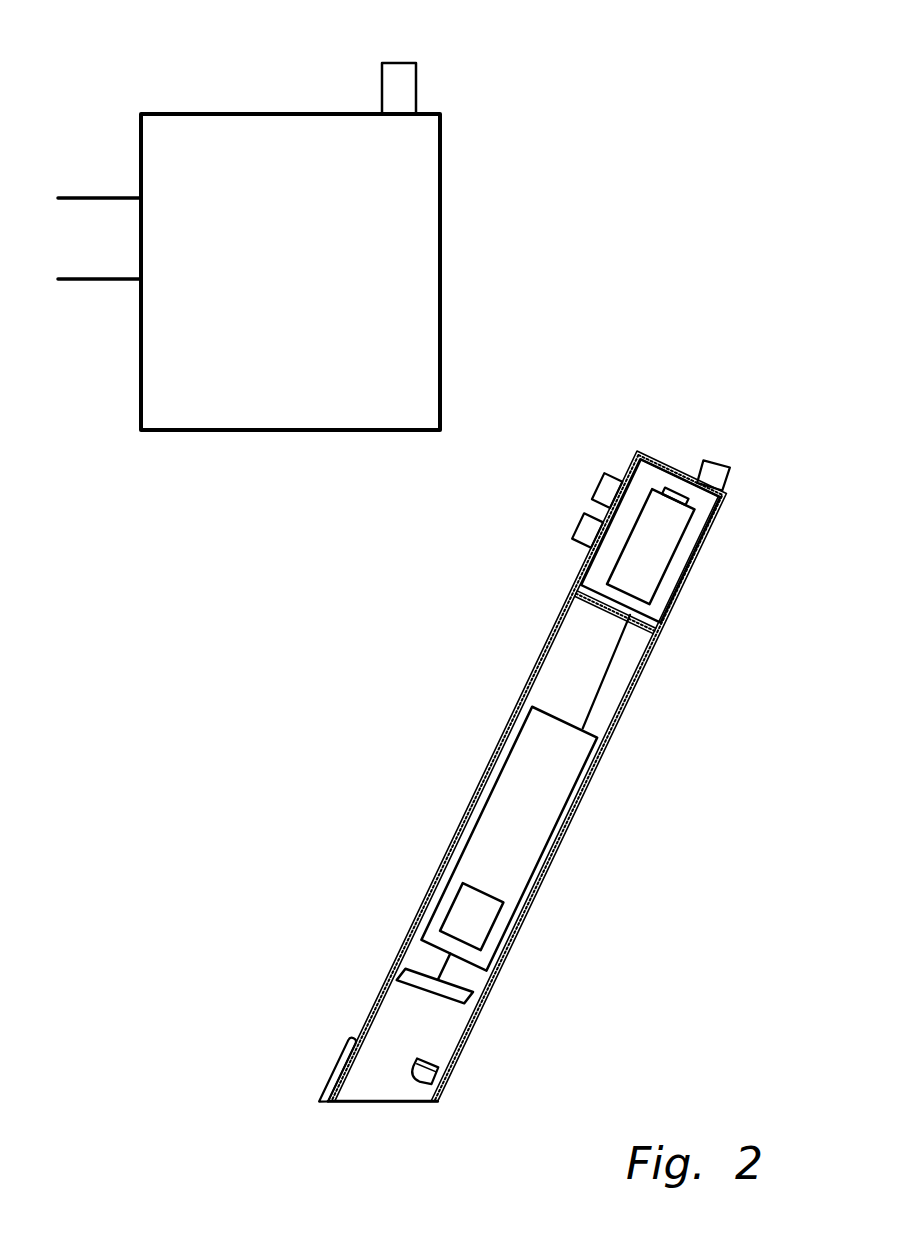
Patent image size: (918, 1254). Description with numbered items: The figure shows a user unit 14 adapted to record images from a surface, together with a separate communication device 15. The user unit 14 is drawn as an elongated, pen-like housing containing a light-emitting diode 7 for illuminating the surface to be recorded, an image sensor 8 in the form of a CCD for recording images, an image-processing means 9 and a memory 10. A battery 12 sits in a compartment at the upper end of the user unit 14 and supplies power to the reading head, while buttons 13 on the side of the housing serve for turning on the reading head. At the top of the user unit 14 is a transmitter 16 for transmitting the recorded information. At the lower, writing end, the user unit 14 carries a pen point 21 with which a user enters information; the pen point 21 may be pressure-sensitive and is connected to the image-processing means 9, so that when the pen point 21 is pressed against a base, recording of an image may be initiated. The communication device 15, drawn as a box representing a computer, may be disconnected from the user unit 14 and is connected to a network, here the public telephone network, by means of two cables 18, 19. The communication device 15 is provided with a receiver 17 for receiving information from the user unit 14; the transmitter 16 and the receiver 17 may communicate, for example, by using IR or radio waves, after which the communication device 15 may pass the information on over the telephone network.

The light-emitting diode 7 is at (442, 1088).
The image sensor 8 is at (469, 995).
The image-processing means 9 is at (510, 871).
The memory 10 is at (477, 916).
The battery 12 is at (650, 562).
The buttons 13 is at (588, 540).
The user unit 14 is at (600, 765).
The communication device 15 is at (253, 113).
The transmitter 16 is at (720, 476).
The receiver 17 is at (407, 84).
The cable 18 is at (100, 197).
The cable 19 is at (86, 281).
The pen point 21 is at (354, 1047).